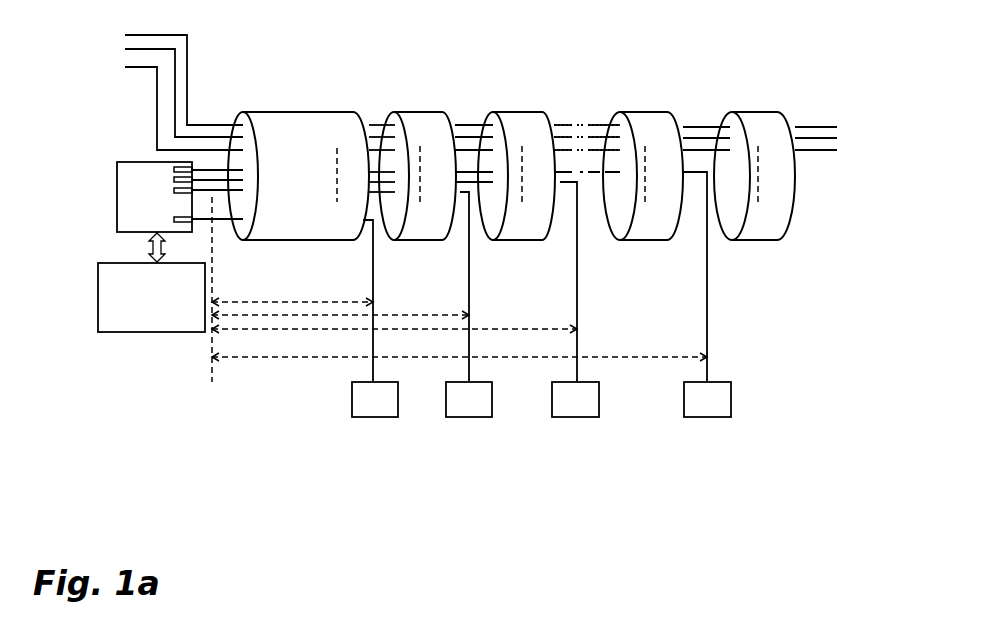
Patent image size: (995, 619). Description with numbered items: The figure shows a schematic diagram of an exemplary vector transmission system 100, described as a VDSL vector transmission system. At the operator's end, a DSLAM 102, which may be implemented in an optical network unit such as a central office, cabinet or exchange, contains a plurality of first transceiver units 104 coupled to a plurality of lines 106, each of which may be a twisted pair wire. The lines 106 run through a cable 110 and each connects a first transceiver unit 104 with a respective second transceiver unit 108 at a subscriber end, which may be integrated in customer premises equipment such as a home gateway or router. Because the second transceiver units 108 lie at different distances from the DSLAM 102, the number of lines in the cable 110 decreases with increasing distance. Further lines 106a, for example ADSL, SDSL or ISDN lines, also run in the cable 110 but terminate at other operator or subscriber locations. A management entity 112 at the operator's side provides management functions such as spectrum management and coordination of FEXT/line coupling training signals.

The vector transmission system 100 is at (412, 540).
The DSLAM 102 is at (120, 213).
The first transceiver units 104 is at (173, 187).
The lines 106 is at (212, 178).
The further lines 106a is at (175, 49).
The second transceiver units 108 is at (377, 417).
The cable 110 is at (333, 119).
The management entity 112 is at (132, 332).